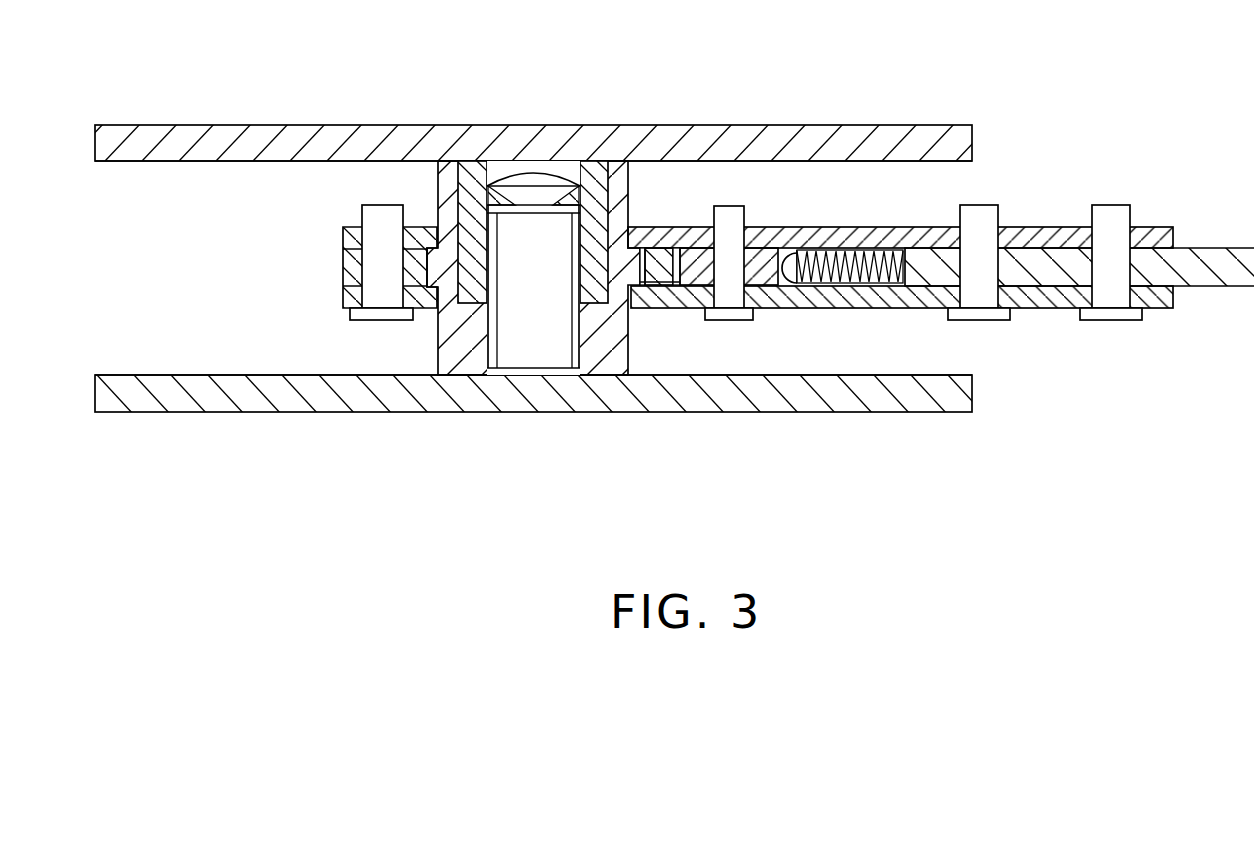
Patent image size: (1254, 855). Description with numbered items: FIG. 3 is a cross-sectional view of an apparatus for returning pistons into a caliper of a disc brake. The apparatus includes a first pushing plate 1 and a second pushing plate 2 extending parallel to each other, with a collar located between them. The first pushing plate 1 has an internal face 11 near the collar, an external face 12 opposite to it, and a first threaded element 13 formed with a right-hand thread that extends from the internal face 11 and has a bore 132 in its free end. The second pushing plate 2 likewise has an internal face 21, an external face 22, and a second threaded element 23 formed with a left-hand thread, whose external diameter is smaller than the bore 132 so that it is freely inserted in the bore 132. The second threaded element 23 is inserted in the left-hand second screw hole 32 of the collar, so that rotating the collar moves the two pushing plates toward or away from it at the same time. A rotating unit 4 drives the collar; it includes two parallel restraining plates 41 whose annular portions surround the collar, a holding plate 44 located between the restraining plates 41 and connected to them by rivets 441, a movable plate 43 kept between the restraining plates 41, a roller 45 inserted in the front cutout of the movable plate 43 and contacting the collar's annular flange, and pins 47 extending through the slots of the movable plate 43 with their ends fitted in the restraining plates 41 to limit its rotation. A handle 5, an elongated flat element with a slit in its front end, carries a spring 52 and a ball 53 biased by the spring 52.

The first pushing plate 1 is at (570, 87).
The internal face 11 is at (946, 162).
The external face 12 is at (862, 125).
The first threaded element 13 is at (475, 165).
The bore 132 is at (473, 210).
The second pushing plate 2 is at (565, 434).
The internal face 21 is at (907, 375).
The external face 22 is at (862, 412).
The second threaded element 23 is at (505, 342).
The second screw hole 32 is at (580, 332).
The rotating unit 4 is at (322, 269).
The holding plate 44 is at (345, 262).
The rivets 441 is at (370, 302).
The roller 45 is at (664, 257).
The pins 47 is at (729, 213).
The movable plate 43 is at (762, 283).
The handle 5 is at (941, 267).
The restraining plates 41 is at (1158, 228).
The spring 52 is at (858, 268).
The ball 53 is at (785, 262).